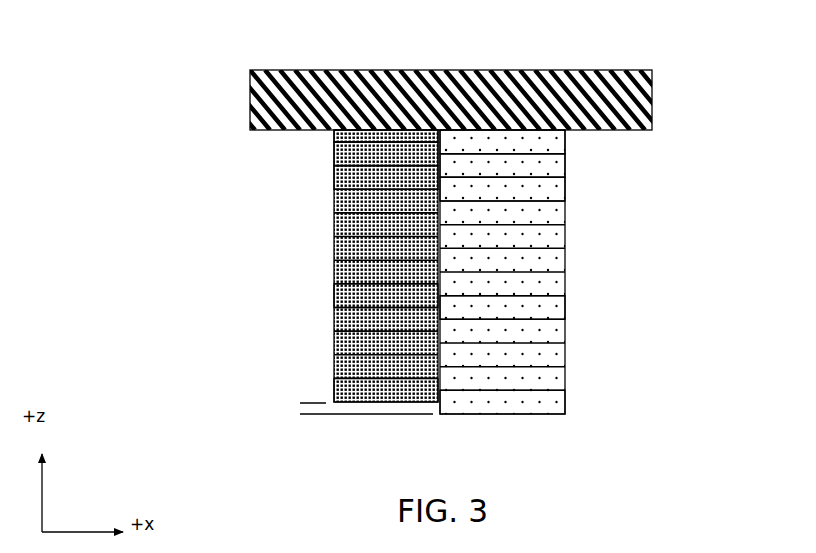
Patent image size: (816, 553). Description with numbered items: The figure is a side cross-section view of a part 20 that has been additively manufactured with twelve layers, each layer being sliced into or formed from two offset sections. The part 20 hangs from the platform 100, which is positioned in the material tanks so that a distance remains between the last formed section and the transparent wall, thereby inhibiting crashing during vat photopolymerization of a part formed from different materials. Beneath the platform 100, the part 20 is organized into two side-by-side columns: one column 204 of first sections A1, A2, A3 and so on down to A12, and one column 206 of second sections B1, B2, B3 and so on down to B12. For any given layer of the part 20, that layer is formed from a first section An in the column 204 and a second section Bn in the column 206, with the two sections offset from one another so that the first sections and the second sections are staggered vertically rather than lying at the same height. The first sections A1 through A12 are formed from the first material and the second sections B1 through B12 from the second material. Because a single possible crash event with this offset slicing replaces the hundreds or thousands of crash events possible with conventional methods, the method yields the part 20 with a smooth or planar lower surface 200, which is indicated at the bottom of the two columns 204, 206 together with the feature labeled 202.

The part 20 is at (411, 260).
The platform 100 is at (631, 66).
The lower surface 200 is at (457, 308).
The bottom layer lines 202 is at (298, 409).
The column of first sections 204 is at (314, 223).
The column of second sections 206 is at (581, 231).
The first section A1 is at (327, 135).
The first section A2 is at (327, 151).
The first section A3 is at (327, 175).
The first section An is at (327, 293).
The first section A12 is at (327, 390).
The second section B1 is at (572, 141).
The second section B2 is at (572, 165).
The second section B3 is at (572, 188).
The second section Bn is at (572, 307).
The second section B12 is at (572, 403).